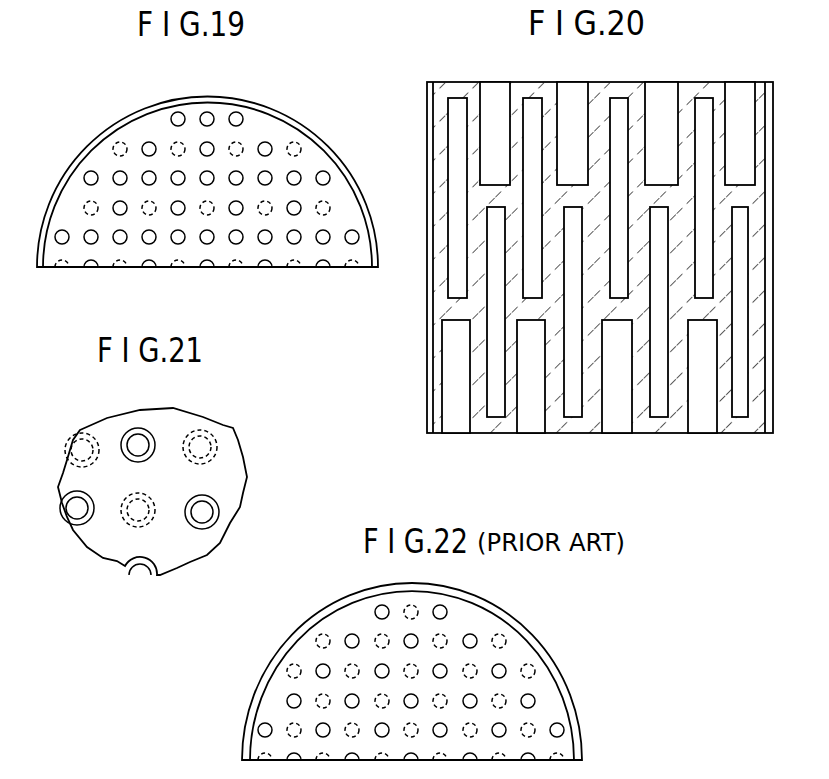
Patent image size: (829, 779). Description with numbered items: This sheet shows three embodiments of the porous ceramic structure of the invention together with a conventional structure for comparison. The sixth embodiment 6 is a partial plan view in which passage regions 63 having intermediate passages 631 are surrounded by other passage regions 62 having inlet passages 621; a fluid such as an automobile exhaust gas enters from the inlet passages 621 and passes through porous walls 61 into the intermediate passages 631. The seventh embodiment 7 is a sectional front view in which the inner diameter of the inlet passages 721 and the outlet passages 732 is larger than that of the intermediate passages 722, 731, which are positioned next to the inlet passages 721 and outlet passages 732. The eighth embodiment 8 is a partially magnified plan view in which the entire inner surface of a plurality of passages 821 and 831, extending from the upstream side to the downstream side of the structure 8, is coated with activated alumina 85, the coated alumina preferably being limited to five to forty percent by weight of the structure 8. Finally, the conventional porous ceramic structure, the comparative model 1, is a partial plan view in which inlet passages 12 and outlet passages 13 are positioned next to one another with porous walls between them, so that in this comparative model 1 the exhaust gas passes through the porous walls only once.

In FIG. 19, the sixth embodiment of the porous ceramic structure 6 is at (313, 124).
In FIG. 19, the porous walls 61 is at (218, 127).
In FIG. 19, the passage regions having inlet passages 62 is at (300, 173).
In FIG. 19, the inlet passages 621 is at (261, 214).
In FIG. 19, the passage regions having intermediate passages 63 is at (242, 142).
In FIG. 19, the intermediate passages 631 is at (246, 146).
In FIG. 20, the seventh embodiment of the porous ceramic structure 7 is at (772, 78).
In FIG. 20, the inlet passages 721 is at (495, 98).
In FIG. 20, the intermediate passages 722 is at (573, 298).
In FIG. 20, the intermediate passages 731 is at (623, 160).
In FIG. 20, the outlet passages 732 is at (458, 427).
In FIG. 21, the eighth embodiment of the porous ceramic structure 8 is at (241, 437).
In FIG. 21, the activated alumina 85 is at (127, 432).
In FIG. 21, the passages 821 is at (137, 448).
In FIG. 21, the passages 831 is at (203, 456).
In FIG. 22, the comparative model 1 is at (539, 634).
In FIG. 22, the inlet passages 12 is at (444, 615).
In FIG. 22, the outlet passages 13 is at (533, 672).